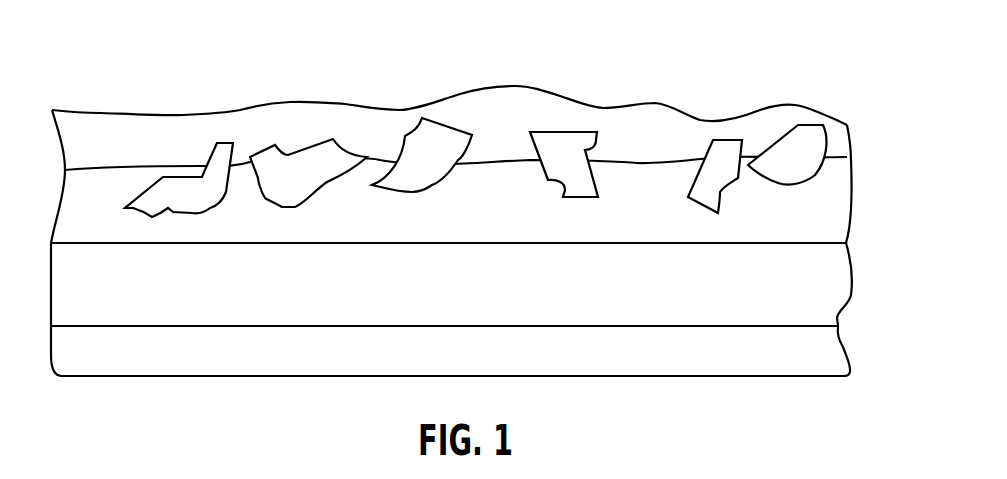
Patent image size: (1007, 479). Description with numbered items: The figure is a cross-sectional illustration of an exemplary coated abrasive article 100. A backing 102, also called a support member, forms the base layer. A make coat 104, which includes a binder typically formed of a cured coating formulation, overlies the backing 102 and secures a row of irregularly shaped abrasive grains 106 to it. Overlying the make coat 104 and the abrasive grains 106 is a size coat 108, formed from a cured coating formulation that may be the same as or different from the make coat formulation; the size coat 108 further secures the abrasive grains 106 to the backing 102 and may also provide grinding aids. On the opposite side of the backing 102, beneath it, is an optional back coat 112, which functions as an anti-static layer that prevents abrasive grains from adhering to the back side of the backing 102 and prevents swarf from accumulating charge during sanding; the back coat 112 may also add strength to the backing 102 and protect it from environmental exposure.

The coated abrasive article 100 is at (489, 197).
The backing 102 is at (840, 275).
The make coat 104 is at (840, 202).
The abrasive grains 106 is at (217, 157).
The size coat 108 is at (840, 150).
The back coat 112 is at (842, 352).